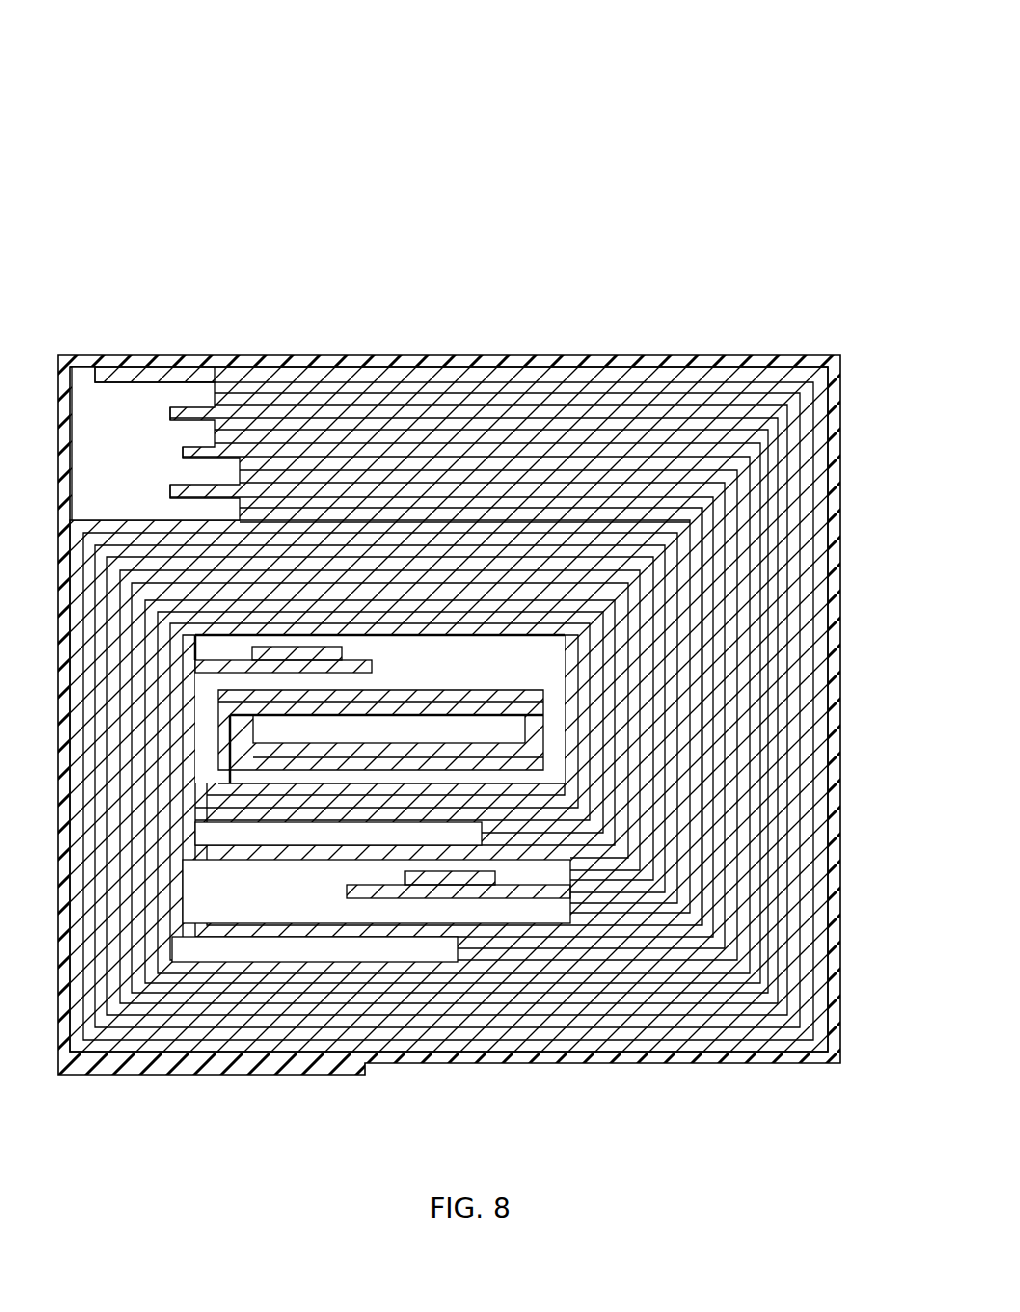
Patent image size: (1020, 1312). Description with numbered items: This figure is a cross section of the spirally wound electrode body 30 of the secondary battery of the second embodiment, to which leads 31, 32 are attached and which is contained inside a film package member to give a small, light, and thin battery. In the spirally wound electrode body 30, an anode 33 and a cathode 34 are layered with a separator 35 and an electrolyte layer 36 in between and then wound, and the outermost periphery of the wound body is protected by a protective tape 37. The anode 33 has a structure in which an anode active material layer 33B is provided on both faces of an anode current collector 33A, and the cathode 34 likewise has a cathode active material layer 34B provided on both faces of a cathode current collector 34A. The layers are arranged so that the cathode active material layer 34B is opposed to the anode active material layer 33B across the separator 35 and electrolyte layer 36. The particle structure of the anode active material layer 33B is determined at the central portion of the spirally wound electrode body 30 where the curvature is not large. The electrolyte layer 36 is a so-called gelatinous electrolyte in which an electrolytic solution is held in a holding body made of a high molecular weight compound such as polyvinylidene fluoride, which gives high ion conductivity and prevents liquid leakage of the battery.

The spirally wound electrode body 30 is at (670, 89).
The lead 31 is at (445, 880).
The lead 32 is at (260, 655).
The anode 33 is at (110, 232).
The anode current collector 33A is at (125, 378).
The anode active material layer 33B is at (263, 518).
The cathode 34 is at (545, 232).
The cathode current collector 34A is at (385, 455).
The cathode active material layer 34B is at (540, 470).
The separator 35 is at (572, 478).
The electrolyte layer 36 is at (678, 490).
The protective tape 37 is at (795, 360).